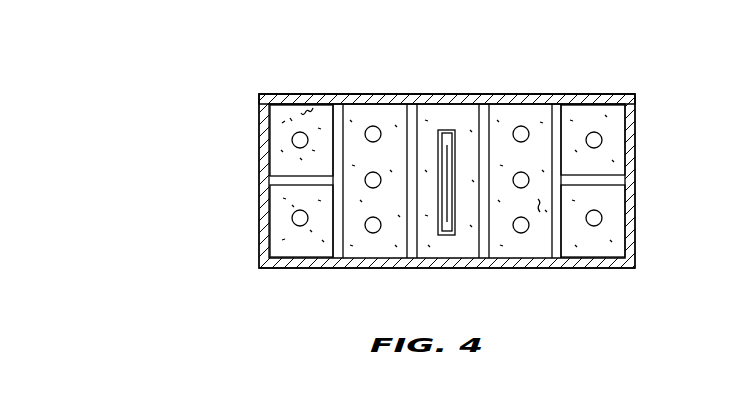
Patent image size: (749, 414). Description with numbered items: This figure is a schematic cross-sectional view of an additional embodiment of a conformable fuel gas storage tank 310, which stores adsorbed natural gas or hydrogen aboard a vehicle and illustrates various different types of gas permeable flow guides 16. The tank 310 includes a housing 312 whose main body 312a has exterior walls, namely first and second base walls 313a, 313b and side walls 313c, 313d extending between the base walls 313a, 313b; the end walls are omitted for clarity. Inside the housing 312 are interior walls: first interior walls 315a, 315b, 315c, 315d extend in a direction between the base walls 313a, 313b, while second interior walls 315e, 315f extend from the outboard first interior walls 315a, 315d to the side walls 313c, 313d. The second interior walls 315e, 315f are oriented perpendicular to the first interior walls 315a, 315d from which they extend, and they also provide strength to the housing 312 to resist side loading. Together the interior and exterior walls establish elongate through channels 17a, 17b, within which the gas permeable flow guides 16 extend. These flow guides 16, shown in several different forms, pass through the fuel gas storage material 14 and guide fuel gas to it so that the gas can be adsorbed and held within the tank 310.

The conformable fuel gas storage tank 310 is at (641, 91).
The housing 312 is at (257, 93).
The main body 312a is at (283, 100).
The first base wall 313a is at (387, 259).
The second base wall 313b is at (381, 103).
The side wall 313c is at (630, 152).
The side wall 313d is at (268, 212).
The first interior wall 315a is at (338, 240).
The first interior wall 315b is at (426, 105).
The first interior wall 315c is at (483, 242).
The first interior wall 315d is at (562, 105).
The second interior wall 315e is at (297, 178).
The second interior wall 315f is at (605, 181).
The fuel gas storage material 14 is at (493, 103).
The gas permeable flow guides 16 is at (450, 106).
The elongate through channel 17a is at (540, 212).
The elongate through channel 17b is at (313, 108).